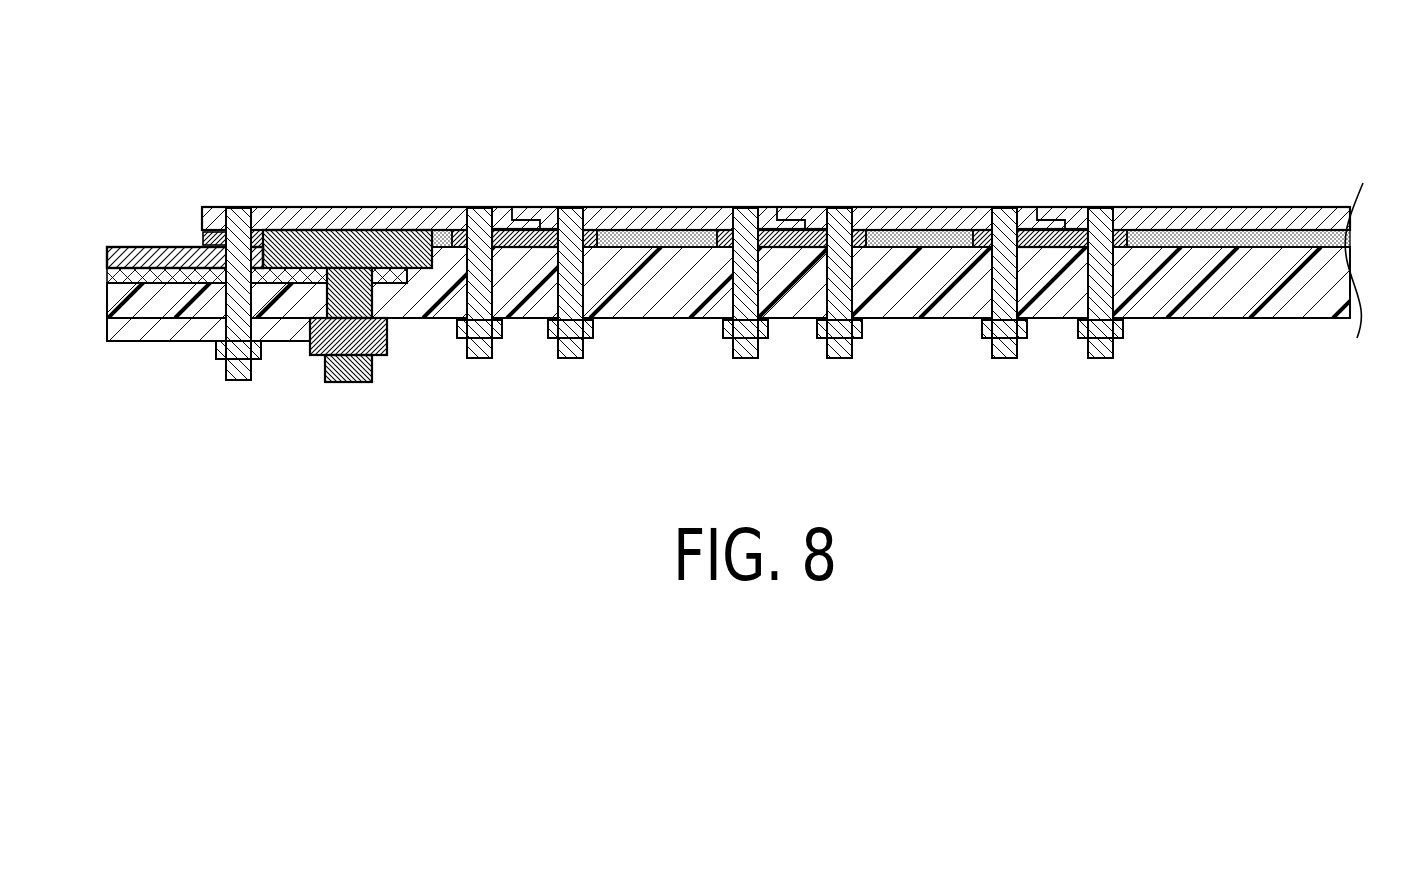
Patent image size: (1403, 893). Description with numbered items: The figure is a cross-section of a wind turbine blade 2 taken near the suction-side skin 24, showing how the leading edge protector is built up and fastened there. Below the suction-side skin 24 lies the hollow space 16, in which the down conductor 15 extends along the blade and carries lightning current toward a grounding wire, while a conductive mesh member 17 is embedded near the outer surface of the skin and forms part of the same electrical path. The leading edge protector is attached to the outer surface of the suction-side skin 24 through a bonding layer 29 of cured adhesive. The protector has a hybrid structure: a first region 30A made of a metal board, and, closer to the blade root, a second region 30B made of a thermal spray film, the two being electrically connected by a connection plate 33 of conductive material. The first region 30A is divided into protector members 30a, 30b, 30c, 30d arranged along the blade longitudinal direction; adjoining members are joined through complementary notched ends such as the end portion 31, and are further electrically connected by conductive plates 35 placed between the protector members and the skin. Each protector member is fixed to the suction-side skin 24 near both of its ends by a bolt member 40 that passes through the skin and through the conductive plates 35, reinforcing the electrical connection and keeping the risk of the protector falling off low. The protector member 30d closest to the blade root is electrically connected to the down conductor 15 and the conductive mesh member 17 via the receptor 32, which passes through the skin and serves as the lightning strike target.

The wind turbine blade 2 is at (755, 251).
The down conductor 15 is at (200, 341).
The hollow space 16 is at (679, 402).
The conductive mesh member 17 is at (140, 282).
The suction-side skin 24 is at (885, 320).
The bonding layer 29 is at (1300, 207).
The first region 30A is at (776, 132).
The protector member 30a is at (1231, 171).
The protector member 30b is at (927, 207).
The protector member 30c is at (662, 207).
The protector member 30d is at (380, 207).
The second region 30B is at (162, 245).
The end portion 31 is at (1052, 207).
The receptor 32 is at (352, 382).
The connection plate 33 is at (210, 207).
The conductive plate 35 is at (523, 248).
The bolt member 40 is at (241, 380).